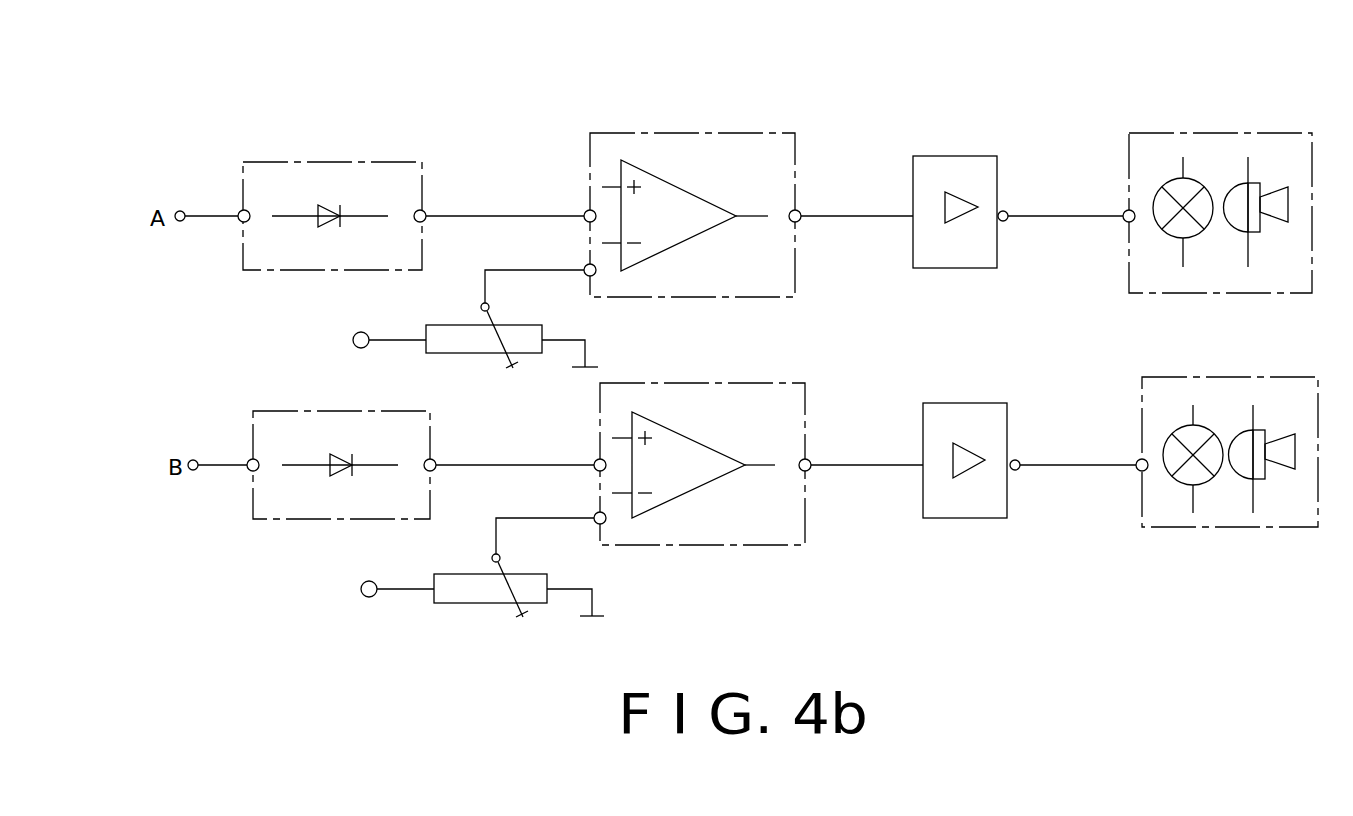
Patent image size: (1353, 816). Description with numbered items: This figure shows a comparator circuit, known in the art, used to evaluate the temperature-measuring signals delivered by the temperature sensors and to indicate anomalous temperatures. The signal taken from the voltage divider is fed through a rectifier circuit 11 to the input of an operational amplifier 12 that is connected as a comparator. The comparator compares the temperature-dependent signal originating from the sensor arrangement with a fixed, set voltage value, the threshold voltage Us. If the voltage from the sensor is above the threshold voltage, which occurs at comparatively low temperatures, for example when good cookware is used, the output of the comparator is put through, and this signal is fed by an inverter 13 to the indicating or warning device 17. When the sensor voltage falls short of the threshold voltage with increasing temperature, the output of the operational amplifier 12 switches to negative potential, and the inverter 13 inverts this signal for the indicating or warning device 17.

The rectifier circuit 11 is at (328, 162).
The operational amplifier 12 is at (660, 133).
The inverter 13 is at (952, 156).
The indicating or warning device 17 is at (1195, 133).